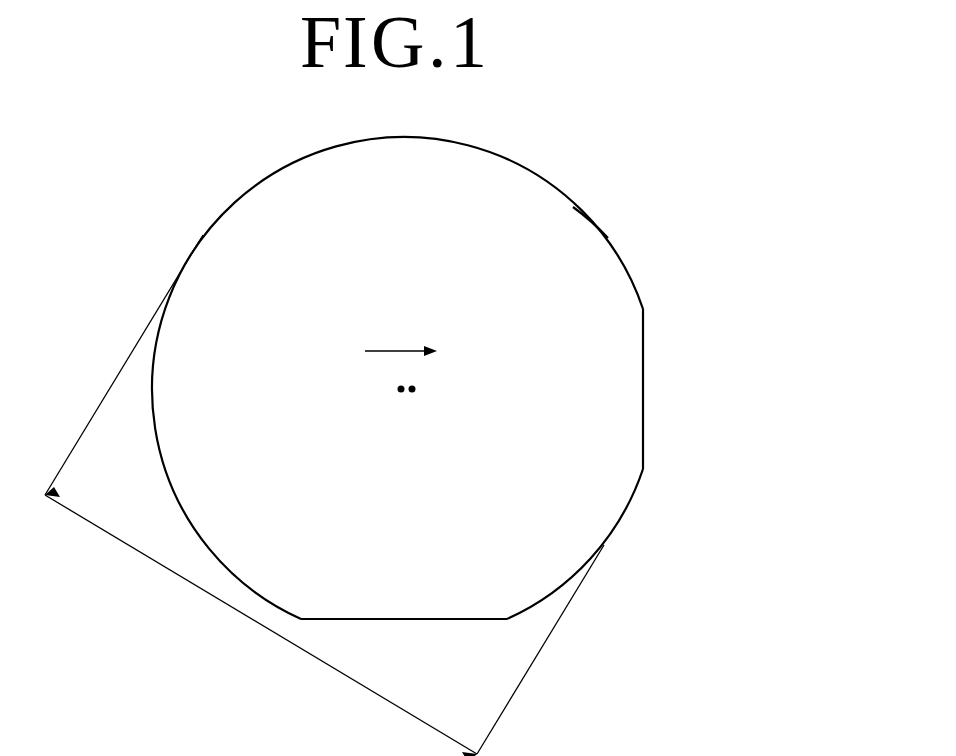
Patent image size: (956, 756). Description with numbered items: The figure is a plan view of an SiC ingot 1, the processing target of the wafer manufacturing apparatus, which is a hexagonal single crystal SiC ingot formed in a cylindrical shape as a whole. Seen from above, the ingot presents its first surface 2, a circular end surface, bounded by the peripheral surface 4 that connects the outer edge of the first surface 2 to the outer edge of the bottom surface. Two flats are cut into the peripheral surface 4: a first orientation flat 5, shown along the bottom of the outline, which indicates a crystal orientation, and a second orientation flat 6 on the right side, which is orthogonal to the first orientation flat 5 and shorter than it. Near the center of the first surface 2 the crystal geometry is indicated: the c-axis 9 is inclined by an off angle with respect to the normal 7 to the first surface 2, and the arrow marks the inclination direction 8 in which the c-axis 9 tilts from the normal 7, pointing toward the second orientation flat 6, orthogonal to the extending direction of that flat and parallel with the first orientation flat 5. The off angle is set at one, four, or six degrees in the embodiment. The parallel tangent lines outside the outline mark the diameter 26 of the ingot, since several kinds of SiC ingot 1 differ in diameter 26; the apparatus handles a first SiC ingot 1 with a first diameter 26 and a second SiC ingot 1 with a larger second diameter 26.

The SiC ingot 1 is at (192, 240).
The first surface 2 is at (530, 206).
The peripheral surface 4 is at (588, 221).
The first orientation flat 5 is at (405, 620).
The second orientation flat 6 is at (643, 393).
The normal 7 is at (399, 390).
The inclination direction 8 is at (401, 350).
The c-axis 9 is at (414, 390).
The diameter 26 is at (273, 632).